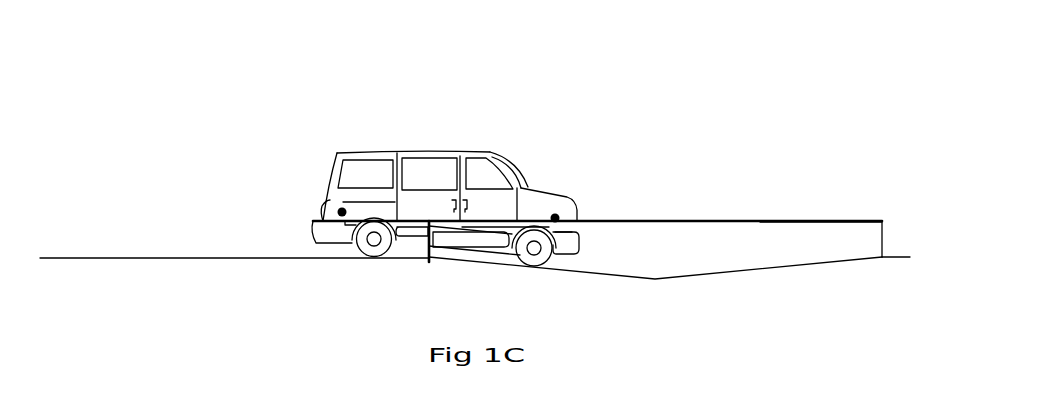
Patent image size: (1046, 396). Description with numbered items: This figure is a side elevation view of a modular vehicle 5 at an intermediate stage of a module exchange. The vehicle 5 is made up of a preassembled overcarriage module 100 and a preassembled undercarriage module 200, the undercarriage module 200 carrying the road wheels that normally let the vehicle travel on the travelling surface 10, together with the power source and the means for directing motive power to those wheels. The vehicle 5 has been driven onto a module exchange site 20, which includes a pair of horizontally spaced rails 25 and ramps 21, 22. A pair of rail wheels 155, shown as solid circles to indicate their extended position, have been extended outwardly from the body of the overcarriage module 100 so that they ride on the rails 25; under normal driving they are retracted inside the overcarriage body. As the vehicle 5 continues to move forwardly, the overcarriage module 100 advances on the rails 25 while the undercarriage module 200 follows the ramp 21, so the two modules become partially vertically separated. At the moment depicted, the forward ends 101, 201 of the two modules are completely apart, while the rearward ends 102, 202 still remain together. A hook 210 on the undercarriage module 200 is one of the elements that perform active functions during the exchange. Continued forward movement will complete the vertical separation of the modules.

The modular vehicle 5 is at (524, 165).
The travelling surface 10 is at (283, 259).
The module exchange site 20 is at (698, 206).
The ramp 21 is at (640, 279).
The ramp 22 is at (822, 263).
The rails 25 is at (867, 222).
The overcarriage module 100 is at (392, 150).
The forward end of overcarriage module 101 is at (578, 206).
The rearward end of overcarriage module 102 is at (322, 207).
The rail wheels 155 is at (337, 212).
The undercarriage module 200 is at (460, 253).
The forward end of undercarriage module 201 is at (578, 251).
The rearward end of undercarriage module 202 is at (316, 232).
The hook 210 is at (561, 230).